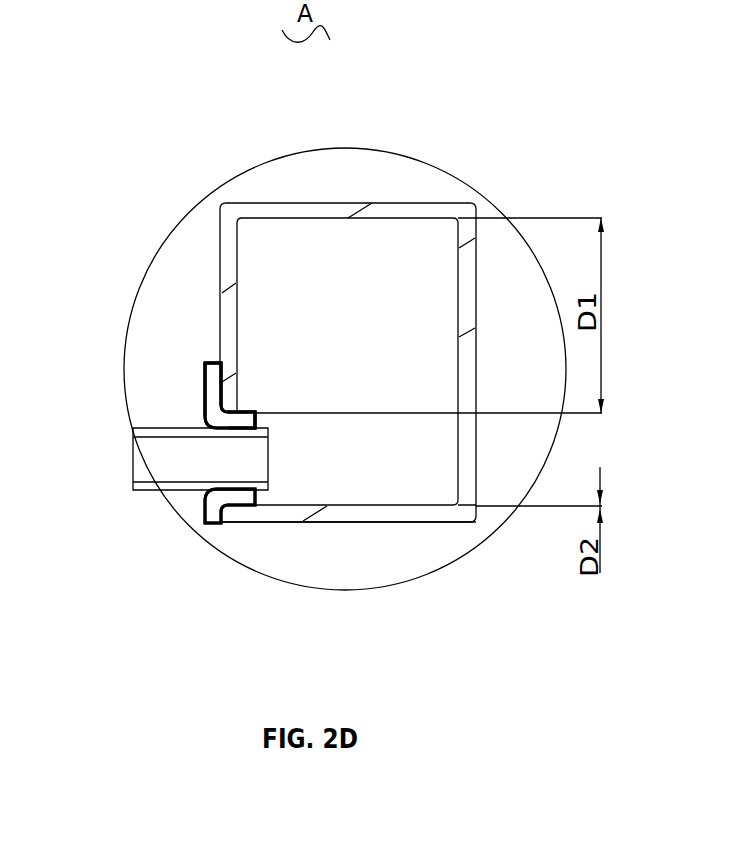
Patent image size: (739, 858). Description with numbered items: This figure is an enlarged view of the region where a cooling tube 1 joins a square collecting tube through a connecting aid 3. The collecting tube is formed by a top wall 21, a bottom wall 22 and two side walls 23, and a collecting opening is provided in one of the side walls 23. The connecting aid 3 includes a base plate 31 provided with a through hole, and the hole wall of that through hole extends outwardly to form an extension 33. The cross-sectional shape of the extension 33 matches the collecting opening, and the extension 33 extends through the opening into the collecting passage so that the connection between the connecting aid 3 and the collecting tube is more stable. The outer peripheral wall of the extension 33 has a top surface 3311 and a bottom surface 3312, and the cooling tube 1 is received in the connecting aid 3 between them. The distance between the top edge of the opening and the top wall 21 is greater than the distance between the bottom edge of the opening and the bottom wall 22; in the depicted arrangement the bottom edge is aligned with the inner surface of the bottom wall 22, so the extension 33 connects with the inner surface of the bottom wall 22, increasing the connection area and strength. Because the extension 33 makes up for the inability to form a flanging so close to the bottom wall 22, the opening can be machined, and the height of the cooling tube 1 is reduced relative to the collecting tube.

The cooling tube 1 is at (188, 460).
The top wall 21 is at (345, 213).
The bottom wall 22 is at (352, 513).
The side wall 23 is at (231, 321).
The connecting aid 3 is at (52, 303).
The base plate 31 is at (207, 370).
The extension 33 is at (203, 420).
The top surface 3311 is at (247, 413).
The bottom surface 3312 is at (228, 510).